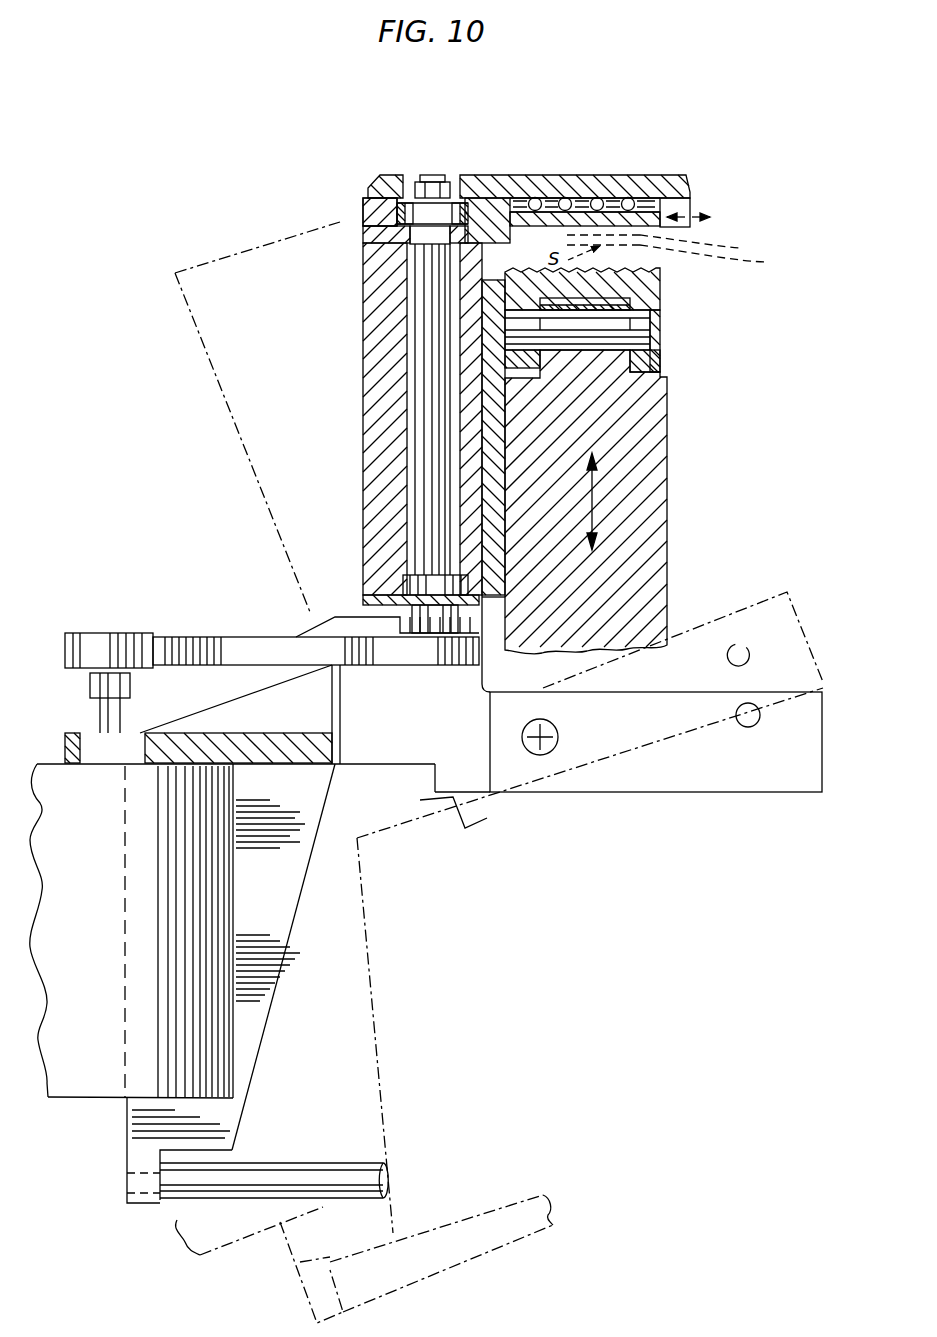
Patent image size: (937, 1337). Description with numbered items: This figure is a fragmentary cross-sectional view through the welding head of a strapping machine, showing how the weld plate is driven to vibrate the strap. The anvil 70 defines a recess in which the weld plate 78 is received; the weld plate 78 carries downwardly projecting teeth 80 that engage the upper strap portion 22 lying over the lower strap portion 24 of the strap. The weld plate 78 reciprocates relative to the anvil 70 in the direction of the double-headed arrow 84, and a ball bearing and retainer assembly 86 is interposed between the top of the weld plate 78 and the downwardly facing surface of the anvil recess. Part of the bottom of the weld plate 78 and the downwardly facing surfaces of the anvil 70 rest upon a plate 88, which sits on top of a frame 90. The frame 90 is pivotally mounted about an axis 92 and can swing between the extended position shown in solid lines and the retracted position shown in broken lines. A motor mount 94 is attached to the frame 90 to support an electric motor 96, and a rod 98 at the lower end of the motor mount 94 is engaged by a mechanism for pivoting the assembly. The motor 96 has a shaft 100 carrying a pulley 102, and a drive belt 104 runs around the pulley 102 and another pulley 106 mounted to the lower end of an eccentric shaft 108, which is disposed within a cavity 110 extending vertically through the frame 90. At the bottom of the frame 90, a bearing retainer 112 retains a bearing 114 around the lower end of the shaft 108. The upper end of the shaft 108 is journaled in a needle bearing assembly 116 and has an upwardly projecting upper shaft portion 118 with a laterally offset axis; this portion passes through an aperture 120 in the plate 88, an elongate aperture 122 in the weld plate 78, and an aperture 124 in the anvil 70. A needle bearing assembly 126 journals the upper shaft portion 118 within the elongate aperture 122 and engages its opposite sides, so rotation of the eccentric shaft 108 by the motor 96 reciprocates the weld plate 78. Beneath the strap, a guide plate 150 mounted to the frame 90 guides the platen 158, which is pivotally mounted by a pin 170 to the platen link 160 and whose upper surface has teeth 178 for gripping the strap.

The upper strap portion 22 is at (668, 247).
The lower strap portion 24 is at (681, 261).
The anvil 70 is at (660, 178).
The weld plate 78 is at (550, 226).
The teeth 80 is at (650, 231).
The double-headed arrow 84 is at (672, 214).
The ball bearing and retainer assembly 86 is at (530, 188).
The plate 88 is at (348, 224).
The frame 90 is at (360, 352).
The axis 92 is at (532, 753).
The motor mount 94 is at (295, 938).
The electric motor 96 is at (240, 876).
The rod 98 is at (300, 1172).
The shaft 100 is at (102, 712).
The pulley 102 is at (118, 634).
The drive belt 104 is at (222, 637).
The pulley 106 is at (352, 612).
The eccentric shaft 108 is at (412, 470).
The cavity 110 is at (412, 420).
The bearing retainer 112 is at (405, 625).
The bearing 114 is at (400, 583).
The needle bearing assembly 116 is at (410, 272).
The upper shaft portion 118 is at (362, 212).
The aperture 120 is at (440, 244).
The elongate aperture 122 is at (368, 222).
The aperture 124 is at (413, 178).
The needle bearing assembly 126 is at (465, 189).
The guide plate 150 is at (497, 603).
The platen 158 is at (662, 292).
The platen link 160 is at (655, 450).
The pin 170 is at (662, 330).
The teeth 178 is at (650, 270).